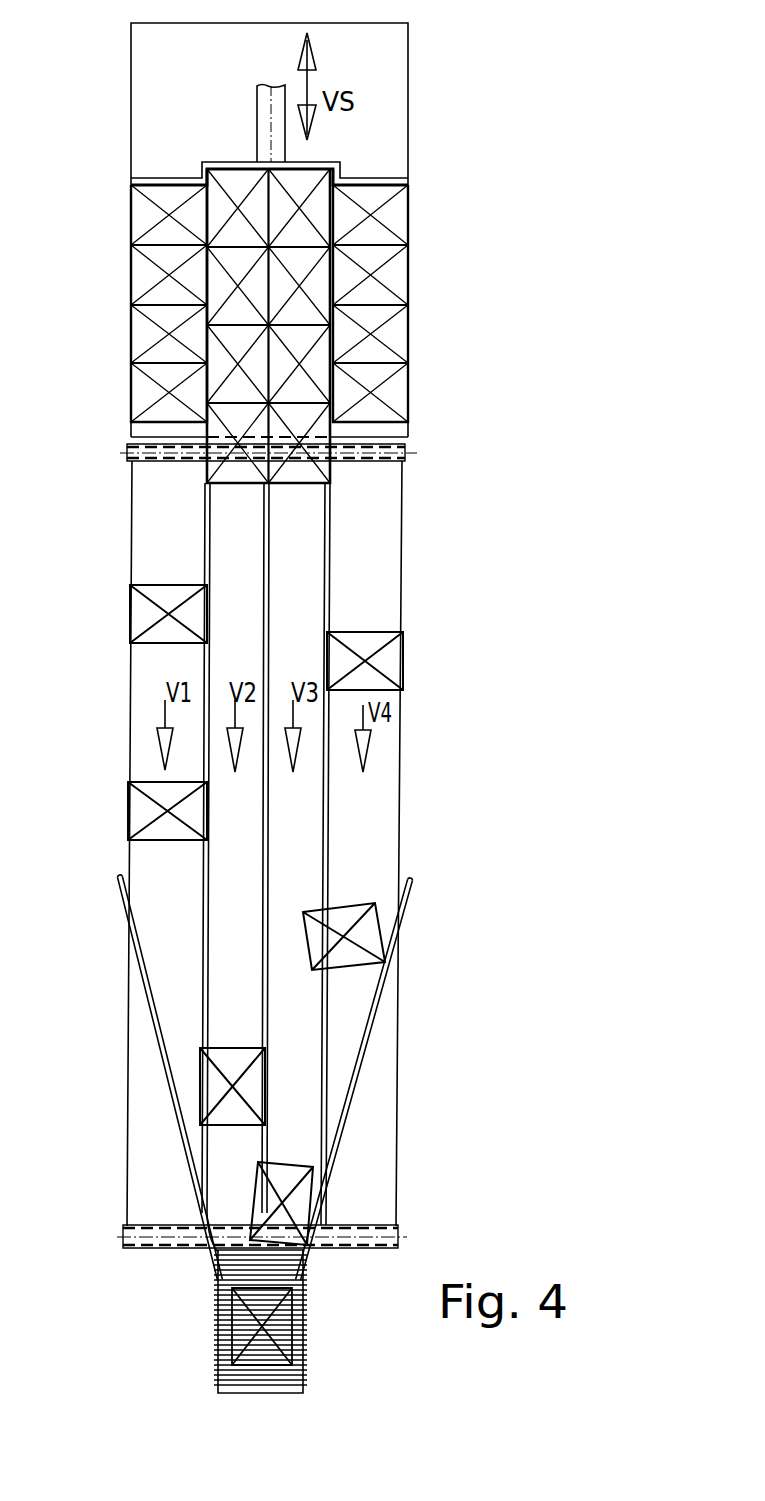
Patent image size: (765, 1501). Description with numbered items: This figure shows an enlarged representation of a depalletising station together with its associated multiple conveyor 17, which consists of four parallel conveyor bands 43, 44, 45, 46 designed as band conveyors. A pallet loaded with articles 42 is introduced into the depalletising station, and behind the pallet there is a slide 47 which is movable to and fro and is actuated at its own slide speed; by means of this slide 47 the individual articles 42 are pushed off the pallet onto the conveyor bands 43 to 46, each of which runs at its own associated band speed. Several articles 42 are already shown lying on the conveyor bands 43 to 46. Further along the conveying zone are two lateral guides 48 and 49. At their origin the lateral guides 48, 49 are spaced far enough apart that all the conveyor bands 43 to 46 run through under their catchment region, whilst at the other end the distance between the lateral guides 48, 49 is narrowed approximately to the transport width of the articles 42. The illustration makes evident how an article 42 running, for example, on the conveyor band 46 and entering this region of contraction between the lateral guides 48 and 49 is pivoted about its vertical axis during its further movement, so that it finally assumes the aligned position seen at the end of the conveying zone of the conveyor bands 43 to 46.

The multiple conveyor 17 is at (425, 592).
The article 42 is at (398, 210).
The conveyor band 43 is at (183, 559).
The conveyor band 44 is at (249, 559).
The conveyor band 45 is at (312, 559).
The conveyor band 46 is at (379, 559).
The slide 47 is at (330, 152).
The lateral guide 48 is at (120, 888).
The lateral guide 49 is at (413, 890).